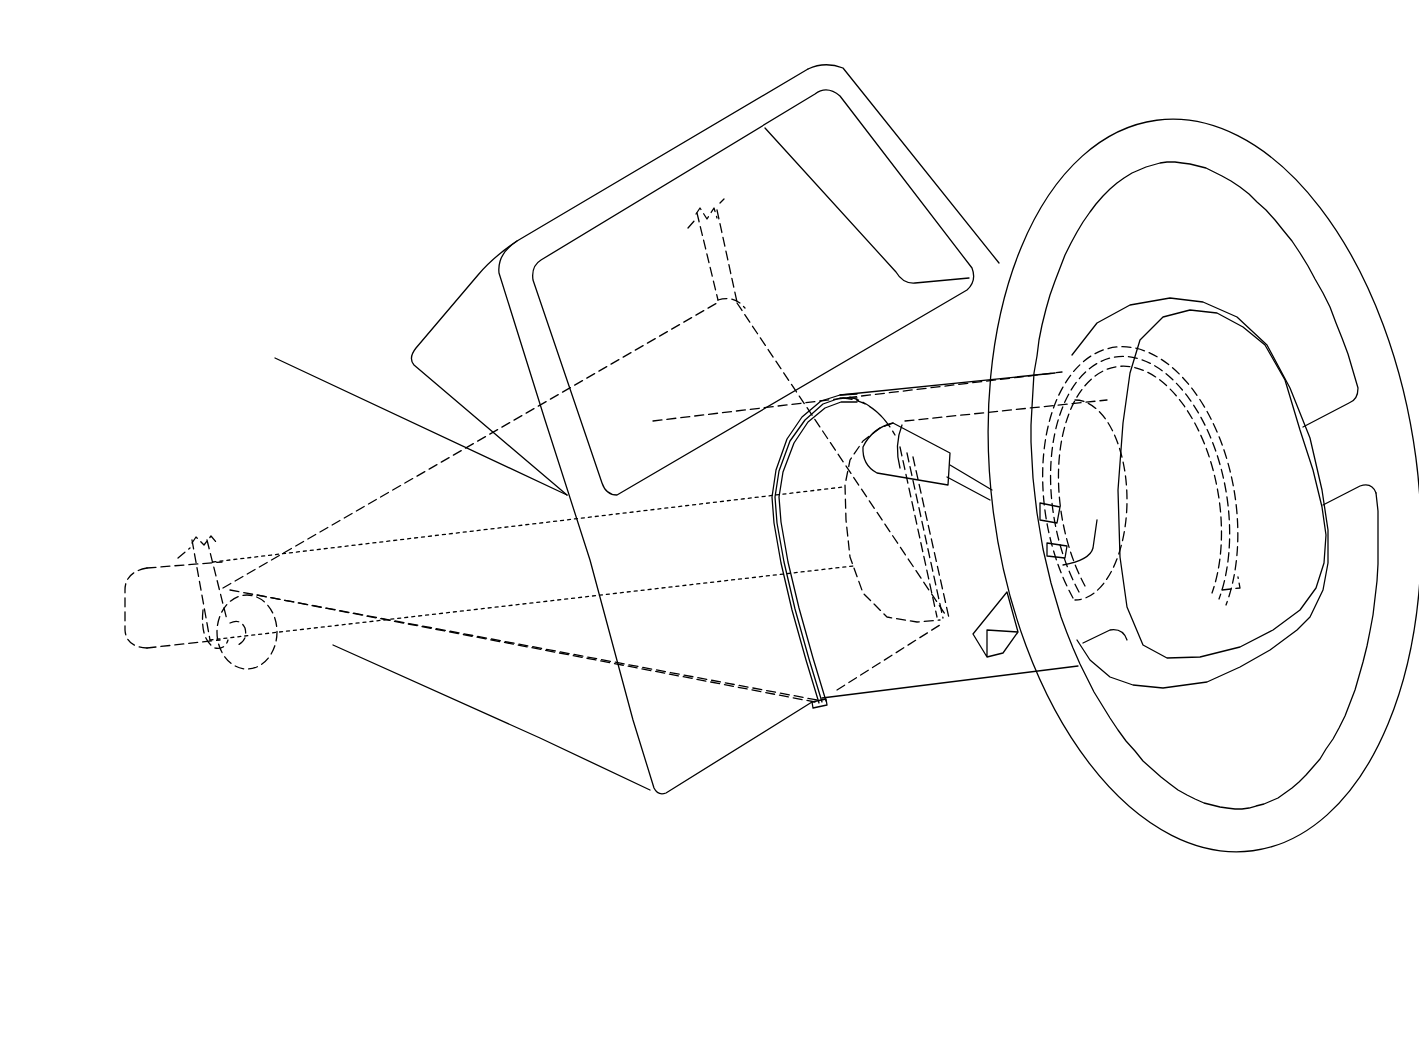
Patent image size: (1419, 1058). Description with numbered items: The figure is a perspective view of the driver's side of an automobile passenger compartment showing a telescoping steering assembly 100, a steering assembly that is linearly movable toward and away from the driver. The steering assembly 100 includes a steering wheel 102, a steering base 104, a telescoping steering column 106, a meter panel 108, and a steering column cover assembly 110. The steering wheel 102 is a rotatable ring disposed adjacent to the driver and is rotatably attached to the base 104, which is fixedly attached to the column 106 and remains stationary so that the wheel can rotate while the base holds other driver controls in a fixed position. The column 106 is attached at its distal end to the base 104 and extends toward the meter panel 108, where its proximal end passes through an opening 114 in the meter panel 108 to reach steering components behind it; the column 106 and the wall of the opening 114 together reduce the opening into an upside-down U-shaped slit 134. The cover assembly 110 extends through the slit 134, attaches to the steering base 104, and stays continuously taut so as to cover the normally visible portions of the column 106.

The telescoping steering assembly 100 is at (1017, 138).
The steering wheel 102 is at (1303, 218).
The steering base 104 is at (1075, 356).
The telescoping steering column 106 is at (962, 596).
The meter panel 108 is at (713, 732).
The steering column cover assembly 110 is at (926, 654).
The opening 114 is at (807, 730).
The upside-down U-shaped slit 134 is at (777, 552).